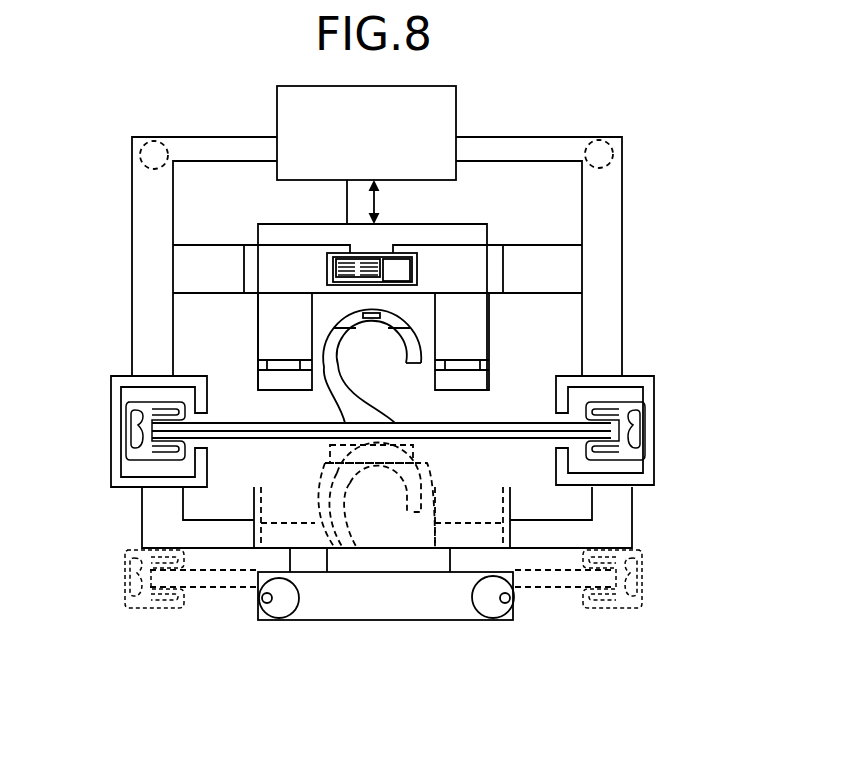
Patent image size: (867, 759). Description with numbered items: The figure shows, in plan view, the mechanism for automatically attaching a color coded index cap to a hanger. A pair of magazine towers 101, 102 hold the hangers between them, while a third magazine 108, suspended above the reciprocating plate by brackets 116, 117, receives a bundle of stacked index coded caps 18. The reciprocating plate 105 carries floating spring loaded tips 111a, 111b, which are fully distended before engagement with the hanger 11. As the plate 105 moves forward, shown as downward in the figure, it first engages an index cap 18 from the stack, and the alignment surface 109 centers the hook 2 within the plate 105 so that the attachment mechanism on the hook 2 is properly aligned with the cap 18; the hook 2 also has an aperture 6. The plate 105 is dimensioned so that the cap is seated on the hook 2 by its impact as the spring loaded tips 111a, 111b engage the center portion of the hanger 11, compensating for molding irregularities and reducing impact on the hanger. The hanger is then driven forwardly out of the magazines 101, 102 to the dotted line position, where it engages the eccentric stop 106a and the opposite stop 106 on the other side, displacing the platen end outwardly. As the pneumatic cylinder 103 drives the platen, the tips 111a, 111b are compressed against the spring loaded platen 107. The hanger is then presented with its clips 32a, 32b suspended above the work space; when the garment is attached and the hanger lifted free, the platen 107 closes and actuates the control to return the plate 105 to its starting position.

The pneumatic cylinder 103 is at (383, 134).
The bracket 116 is at (245, 243).
The bracket 117 is at (560, 244).
The third magazine 108 is at (413, 245).
The index coded cap 18 is at (382, 253).
The aperture of hook 6 is at (396, 270).
The alignment surface 109 is at (330, 312).
The spring loaded tip 111a is at (258, 378).
The spring loaded tip 111b is at (489, 371).
The reciprocating plate 105 is at (303, 374).
The hook 2 is at (375, 320).
The magazine tower 101 is at (110, 428).
The magazine tower 102 is at (655, 422).
The hanger 11 is at (477, 423).
The clip 32a is at (160, 548).
The clip 32b is at (175, 607).
The spring loaded platen 107 is at (347, 603).
The eccentric stop 106a is at (283, 607).
The right roller 106 is at (485, 608).